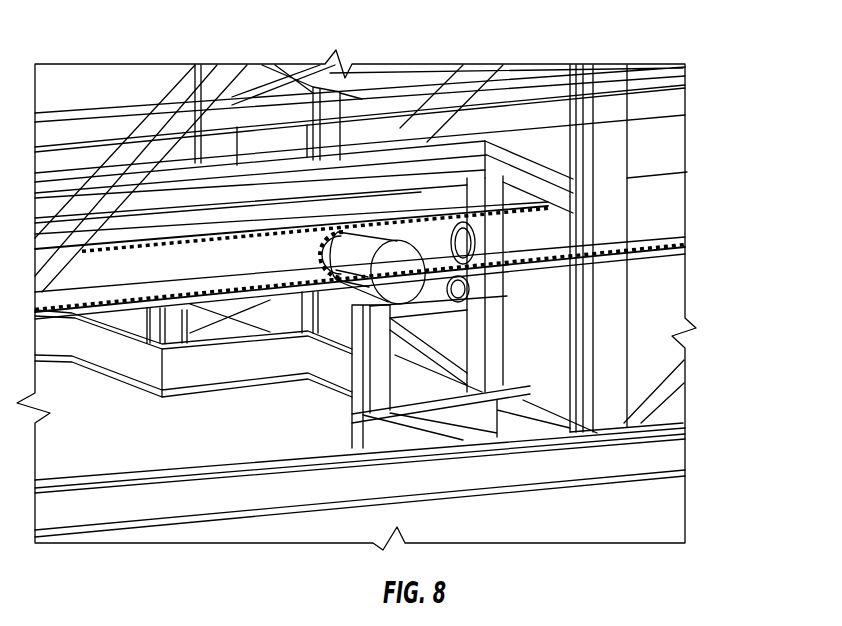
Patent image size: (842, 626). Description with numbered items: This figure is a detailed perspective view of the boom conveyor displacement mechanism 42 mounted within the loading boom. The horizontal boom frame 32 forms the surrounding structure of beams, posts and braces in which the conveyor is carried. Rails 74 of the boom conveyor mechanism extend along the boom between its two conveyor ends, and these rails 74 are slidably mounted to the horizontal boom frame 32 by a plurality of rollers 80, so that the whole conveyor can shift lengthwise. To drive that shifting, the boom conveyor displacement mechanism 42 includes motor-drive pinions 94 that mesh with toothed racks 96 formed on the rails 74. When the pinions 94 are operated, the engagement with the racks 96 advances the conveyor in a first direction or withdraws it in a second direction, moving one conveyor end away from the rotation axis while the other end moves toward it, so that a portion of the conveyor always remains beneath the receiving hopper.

The horizontal boom frame 32 is at (724, 459).
The boom conveyor displacement mechanism 42 is at (474, 113).
The rails 74 is at (655, 217).
The rollers 80 is at (470, 302).
The motor-drive pinions 94 is at (316, 256).
The racks 96 is at (267, 228).